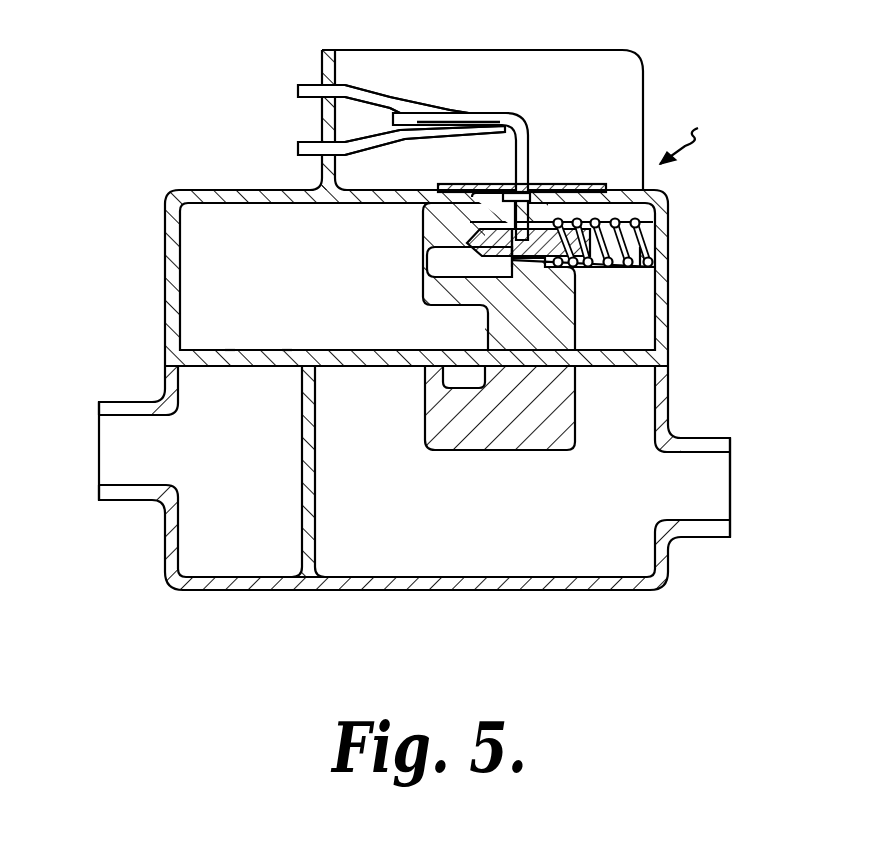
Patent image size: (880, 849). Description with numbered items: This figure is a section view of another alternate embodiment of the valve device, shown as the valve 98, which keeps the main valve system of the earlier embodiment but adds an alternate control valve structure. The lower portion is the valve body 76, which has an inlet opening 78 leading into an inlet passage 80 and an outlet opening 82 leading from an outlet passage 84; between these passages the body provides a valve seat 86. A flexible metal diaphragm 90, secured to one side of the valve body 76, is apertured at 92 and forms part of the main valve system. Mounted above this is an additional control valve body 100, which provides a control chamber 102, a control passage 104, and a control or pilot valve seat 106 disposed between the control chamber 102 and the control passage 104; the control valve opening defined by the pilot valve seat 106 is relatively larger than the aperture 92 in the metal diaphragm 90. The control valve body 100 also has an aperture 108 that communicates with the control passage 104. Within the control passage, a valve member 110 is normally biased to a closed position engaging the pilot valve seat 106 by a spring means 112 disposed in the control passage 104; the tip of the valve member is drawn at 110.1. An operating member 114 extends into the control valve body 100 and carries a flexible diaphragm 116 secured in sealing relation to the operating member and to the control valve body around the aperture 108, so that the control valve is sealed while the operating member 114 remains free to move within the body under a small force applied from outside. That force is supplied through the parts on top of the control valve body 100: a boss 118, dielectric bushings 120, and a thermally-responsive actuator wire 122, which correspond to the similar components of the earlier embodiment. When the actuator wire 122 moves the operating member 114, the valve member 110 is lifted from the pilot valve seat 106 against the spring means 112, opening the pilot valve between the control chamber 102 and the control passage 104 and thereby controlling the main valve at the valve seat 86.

The valve body 76 is at (662, 403).
The inlet opening 78 is at (110, 453).
The inlet passage 80 is at (231, 470).
The outlet opening 82 is at (702, 478).
The outlet passage 84 is at (530, 520).
The valve seat 86 is at (316, 369).
The flexible metal diaphragm 90 is at (231, 367).
The aperture 92 is at (286, 367).
The valve 98 is at (700, 137).
The control valve body 100 is at (176, 192).
The control chamber 102 is at (290, 278).
The control passage 104 is at (642, 345).
The control or pilot valve seat 106 is at (478, 252).
The aperture 108 is at (556, 200).
The valve member 110 is at (470, 243).
The valve member tip 110.1 is at (505, 262).
The spring means 112 is at (606, 266).
The operating member 114 is at (514, 113).
The flexible diaphragm 116 is at (490, 185).
The boss 118 is at (538, 34).
The dielectric bushings 120 is at (323, 78).
The thermally-responsive actuator wire 122 is at (405, 98).